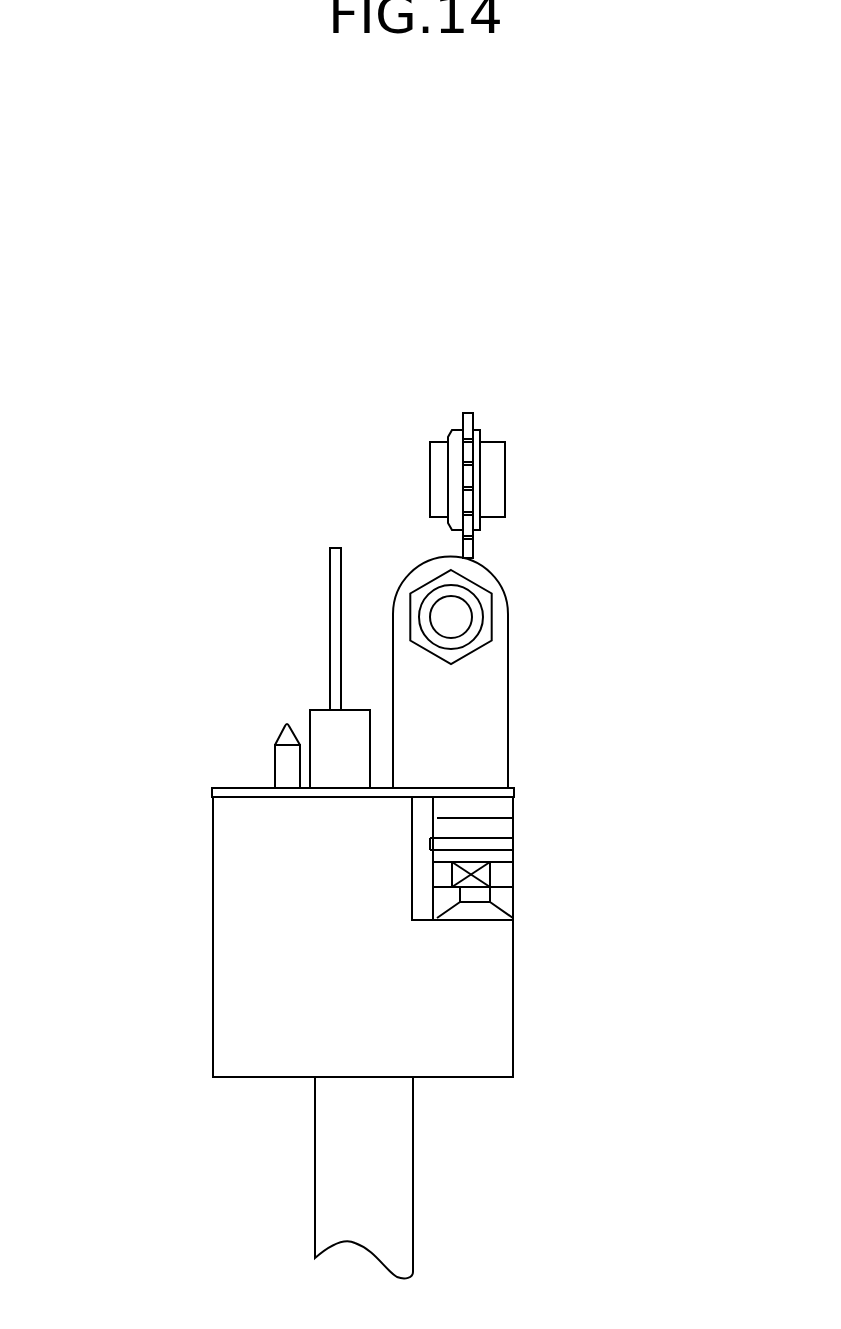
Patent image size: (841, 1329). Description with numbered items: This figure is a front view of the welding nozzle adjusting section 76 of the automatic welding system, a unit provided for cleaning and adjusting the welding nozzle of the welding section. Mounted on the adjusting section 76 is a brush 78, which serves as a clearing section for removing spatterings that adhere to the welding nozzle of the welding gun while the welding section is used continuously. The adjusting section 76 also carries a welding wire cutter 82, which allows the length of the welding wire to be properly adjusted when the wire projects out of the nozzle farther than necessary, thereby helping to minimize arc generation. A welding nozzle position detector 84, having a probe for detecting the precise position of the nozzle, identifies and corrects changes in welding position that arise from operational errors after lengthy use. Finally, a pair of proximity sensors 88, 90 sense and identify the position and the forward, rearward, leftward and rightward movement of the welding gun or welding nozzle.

The welding nozzle adjusting section 76 is at (478, 1045).
The brush 78 is at (335, 588).
The welding wire cutter 82 is at (502, 855).
The welding nozzle position detector 84 is at (282, 767).
The proximity sensor 88 is at (458, 615).
The proximity sensor 90 is at (492, 482).